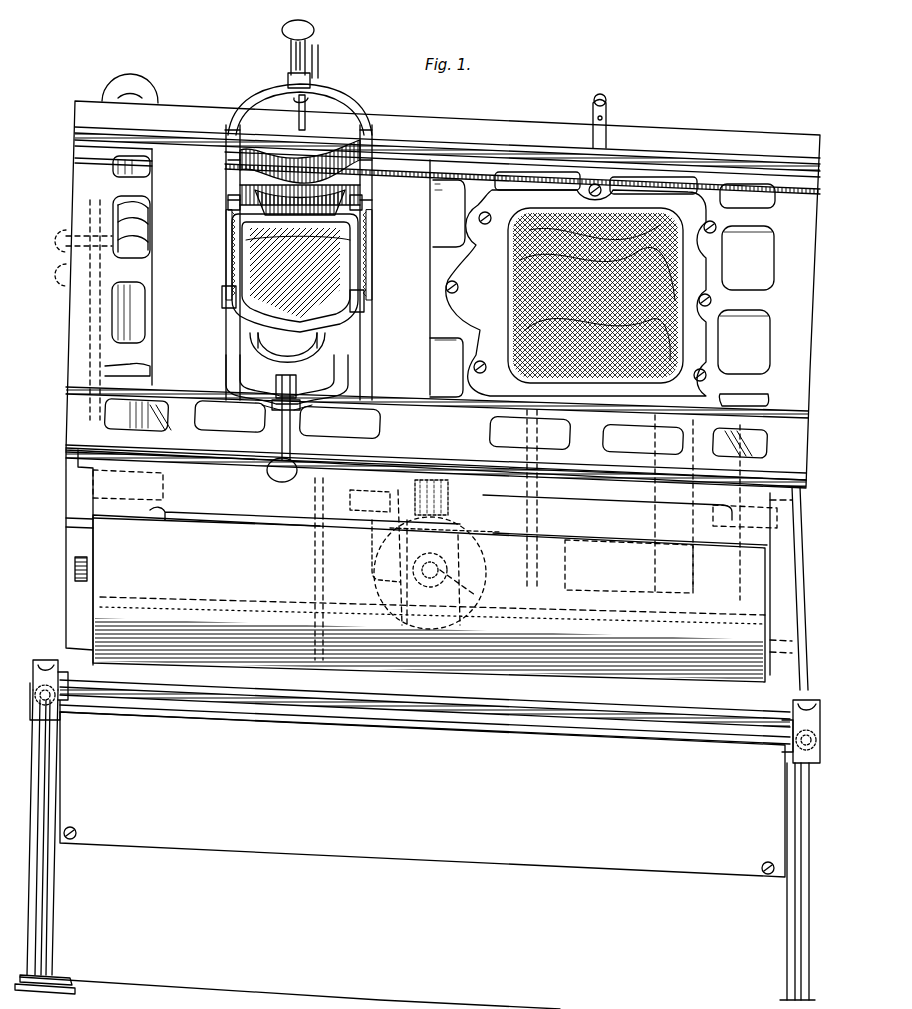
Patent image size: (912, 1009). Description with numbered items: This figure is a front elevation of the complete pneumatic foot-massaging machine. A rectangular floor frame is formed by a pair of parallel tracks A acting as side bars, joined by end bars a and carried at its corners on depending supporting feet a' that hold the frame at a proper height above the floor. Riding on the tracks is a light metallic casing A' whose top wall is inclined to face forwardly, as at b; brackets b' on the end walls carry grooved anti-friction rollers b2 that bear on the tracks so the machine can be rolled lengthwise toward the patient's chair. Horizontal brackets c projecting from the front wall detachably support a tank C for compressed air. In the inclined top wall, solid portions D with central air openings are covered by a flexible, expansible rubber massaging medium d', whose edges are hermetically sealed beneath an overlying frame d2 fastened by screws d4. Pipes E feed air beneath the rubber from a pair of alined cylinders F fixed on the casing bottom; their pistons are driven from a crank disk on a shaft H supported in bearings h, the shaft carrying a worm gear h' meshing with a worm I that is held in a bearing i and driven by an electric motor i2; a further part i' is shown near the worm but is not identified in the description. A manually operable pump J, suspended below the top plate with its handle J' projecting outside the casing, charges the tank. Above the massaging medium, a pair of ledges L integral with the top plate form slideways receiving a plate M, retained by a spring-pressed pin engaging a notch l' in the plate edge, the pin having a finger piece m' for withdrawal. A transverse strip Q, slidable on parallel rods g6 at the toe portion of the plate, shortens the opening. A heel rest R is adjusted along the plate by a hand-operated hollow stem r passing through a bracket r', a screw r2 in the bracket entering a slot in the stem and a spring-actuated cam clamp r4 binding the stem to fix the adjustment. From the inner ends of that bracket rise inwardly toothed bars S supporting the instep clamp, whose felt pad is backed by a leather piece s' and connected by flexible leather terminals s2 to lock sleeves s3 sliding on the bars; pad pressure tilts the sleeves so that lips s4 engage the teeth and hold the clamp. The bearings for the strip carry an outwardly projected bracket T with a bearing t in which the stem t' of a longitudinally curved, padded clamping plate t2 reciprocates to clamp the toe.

The stem t' is at (307, 47).
The bearing t is at (288, 66).
The bracket T is at (345, 114).
The curved clamping plate t2 is at (362, 136).
The pump handle J' is at (139, 83).
The plate M is at (178, 168).
The parallel rods g6 is at (232, 200).
The transversely disposed strip Q is at (362, 194).
The leather piece s' is at (317, 229).
The inwardly toothed bars S is at (360, 272).
The flexible leather terminals s2 is at (366, 296).
The lock sleeves s3 is at (366, 314).
The lips or flanges s4 is at (222, 300).
The heel rest R is at (308, 355).
The massaging medium d' is at (325, 239).
The pump J is at (102, 308).
The inclined top wall b is at (436, 299).
The notch l' is at (474, 135).
The finger piece m' is at (616, 116).
The frame or casing A' is at (422, 485).
The ledges L is at (708, 150).
The screws d4 is at (492, 218).
The overlying frame d2 is at (487, 372).
The solid portions D is at (470, 252).
The pipes E is at (165, 425).
The cam clamp r4 is at (229, 417).
The screw r2 is at (339, 422).
The bracket r' is at (277, 427).
The hand operated stem r is at (288, 428).
The bearing i is at (386, 476).
The rack i' is at (397, 478).
The worm gear h' is at (421, 518).
The shaft H is at (440, 572).
The bearings h is at (434, 557).
The worm I is at (486, 562).
The tank C is at (345, 599).
The cylinders F is at (222, 618).
The motor i2 is at (642, 439).
The brackets c is at (66, 528).
The brackets b' is at (427, 688).
The anti-friction rollers b2 is at (70, 702).
The tracks A is at (415, 845).
The supporting feet a' is at (424, 801).
The end bars a is at (425, 719).